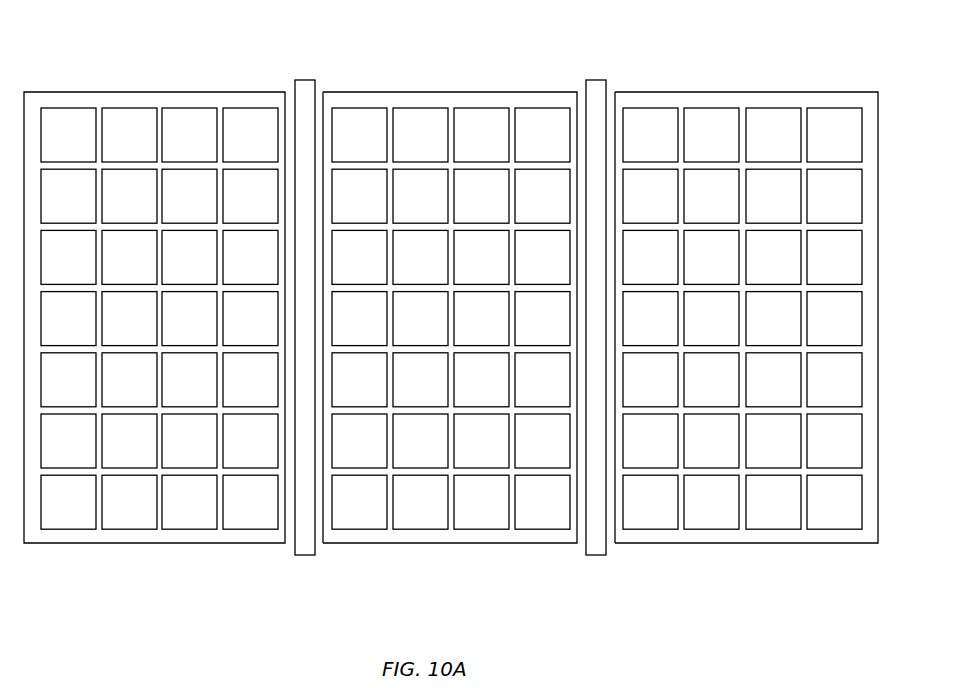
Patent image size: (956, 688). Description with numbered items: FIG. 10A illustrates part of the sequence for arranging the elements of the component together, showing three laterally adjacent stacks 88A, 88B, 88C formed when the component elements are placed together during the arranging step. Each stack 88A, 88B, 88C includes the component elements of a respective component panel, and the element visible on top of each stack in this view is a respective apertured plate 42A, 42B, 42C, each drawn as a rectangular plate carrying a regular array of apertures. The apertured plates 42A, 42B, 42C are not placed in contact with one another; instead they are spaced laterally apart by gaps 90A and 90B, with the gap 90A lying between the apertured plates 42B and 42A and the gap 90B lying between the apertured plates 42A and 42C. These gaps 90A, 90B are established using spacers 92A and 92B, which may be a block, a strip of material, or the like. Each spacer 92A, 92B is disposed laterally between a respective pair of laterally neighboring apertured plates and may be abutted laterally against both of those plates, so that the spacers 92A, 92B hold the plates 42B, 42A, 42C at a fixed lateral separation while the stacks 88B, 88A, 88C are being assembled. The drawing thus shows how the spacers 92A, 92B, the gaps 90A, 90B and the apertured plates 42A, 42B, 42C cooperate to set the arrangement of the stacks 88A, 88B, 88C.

The stack 88A is at (499, 83).
The stack 88B is at (237, 83).
The stack 88C is at (779, 83).
The gap 90A is at (316, 133).
The gap 90B is at (607, 133).
The spacer 92A is at (306, 77).
The spacer 92B is at (594, 77).
The apertured plate 42A is at (407, 554).
The apertured plate 42B is at (195, 554).
The apertured plate 42C is at (746, 557).